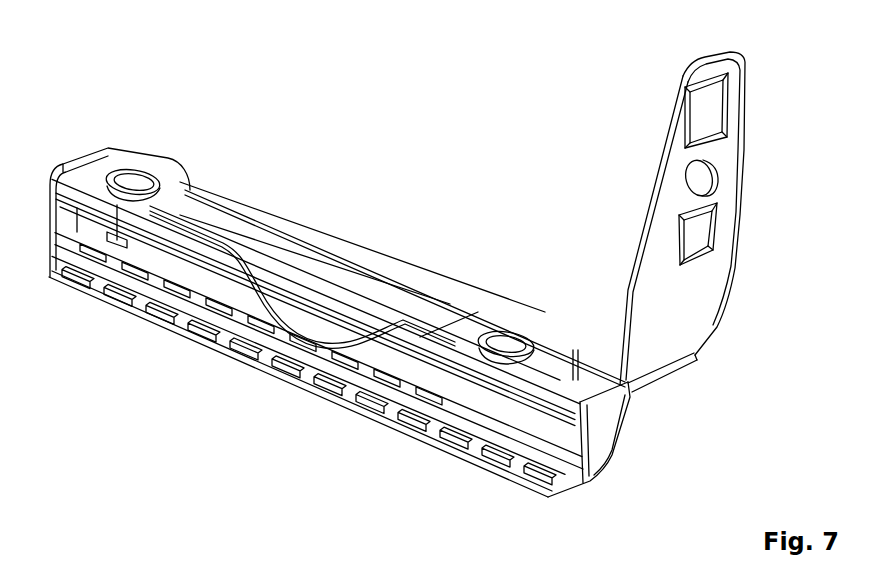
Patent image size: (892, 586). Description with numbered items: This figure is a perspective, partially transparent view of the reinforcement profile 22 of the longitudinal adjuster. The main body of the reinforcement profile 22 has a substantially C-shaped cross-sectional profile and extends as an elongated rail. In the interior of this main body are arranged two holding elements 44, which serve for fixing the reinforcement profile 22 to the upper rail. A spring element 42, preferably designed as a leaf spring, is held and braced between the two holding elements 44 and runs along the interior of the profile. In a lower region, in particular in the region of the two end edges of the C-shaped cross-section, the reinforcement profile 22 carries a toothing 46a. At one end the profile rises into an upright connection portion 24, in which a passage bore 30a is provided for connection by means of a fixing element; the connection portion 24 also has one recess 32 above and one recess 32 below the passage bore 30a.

The reinforcement profile 22 is at (347, 280).
The connection portion 24 is at (648, 325).
The passage bore 30a is at (697, 184).
The recess 32 is at (705, 115).
The spring element 42 is at (270, 295).
The holding element 44 is at (75, 200).
The toothing 46a is at (293, 373).